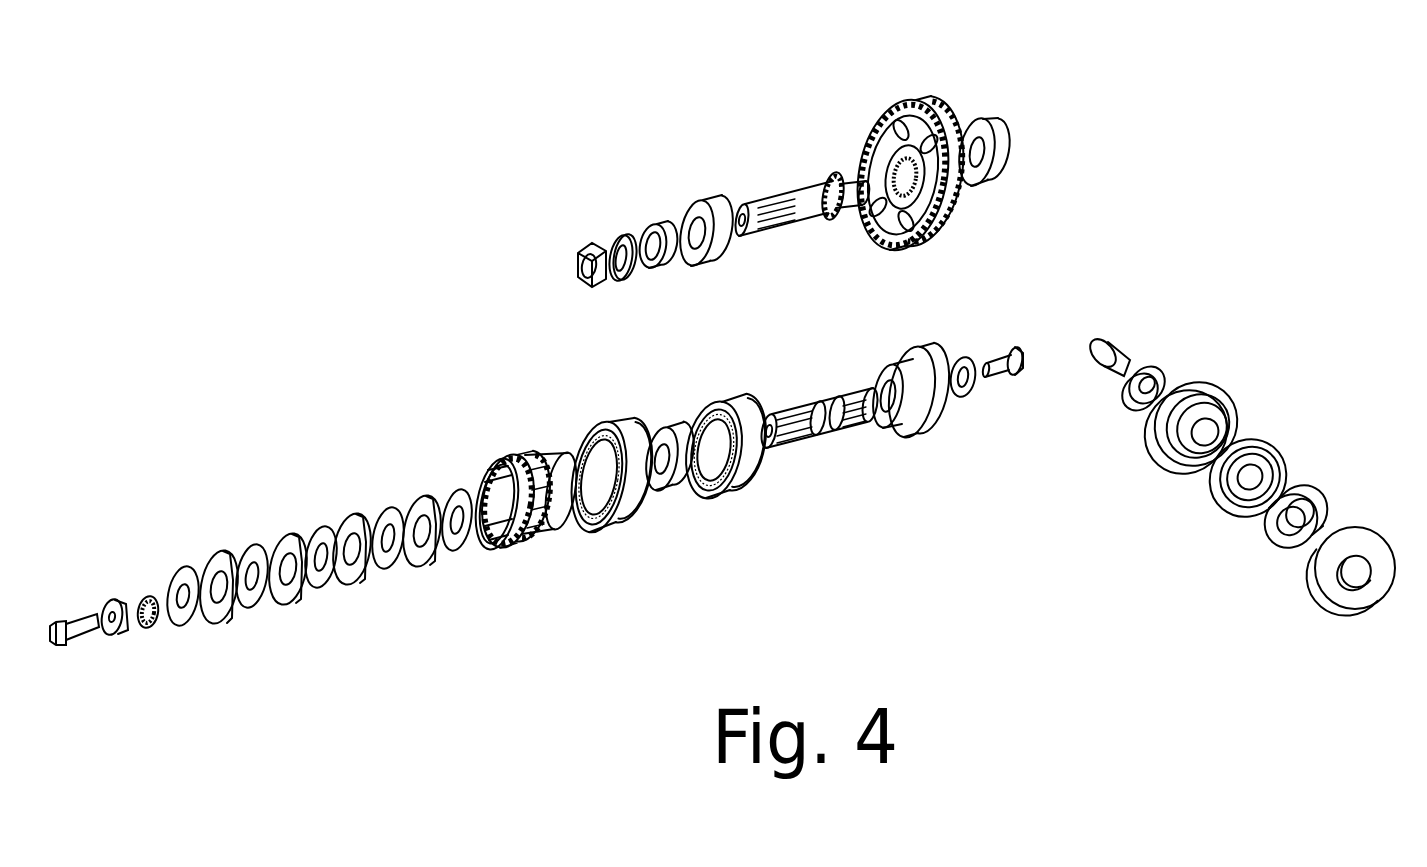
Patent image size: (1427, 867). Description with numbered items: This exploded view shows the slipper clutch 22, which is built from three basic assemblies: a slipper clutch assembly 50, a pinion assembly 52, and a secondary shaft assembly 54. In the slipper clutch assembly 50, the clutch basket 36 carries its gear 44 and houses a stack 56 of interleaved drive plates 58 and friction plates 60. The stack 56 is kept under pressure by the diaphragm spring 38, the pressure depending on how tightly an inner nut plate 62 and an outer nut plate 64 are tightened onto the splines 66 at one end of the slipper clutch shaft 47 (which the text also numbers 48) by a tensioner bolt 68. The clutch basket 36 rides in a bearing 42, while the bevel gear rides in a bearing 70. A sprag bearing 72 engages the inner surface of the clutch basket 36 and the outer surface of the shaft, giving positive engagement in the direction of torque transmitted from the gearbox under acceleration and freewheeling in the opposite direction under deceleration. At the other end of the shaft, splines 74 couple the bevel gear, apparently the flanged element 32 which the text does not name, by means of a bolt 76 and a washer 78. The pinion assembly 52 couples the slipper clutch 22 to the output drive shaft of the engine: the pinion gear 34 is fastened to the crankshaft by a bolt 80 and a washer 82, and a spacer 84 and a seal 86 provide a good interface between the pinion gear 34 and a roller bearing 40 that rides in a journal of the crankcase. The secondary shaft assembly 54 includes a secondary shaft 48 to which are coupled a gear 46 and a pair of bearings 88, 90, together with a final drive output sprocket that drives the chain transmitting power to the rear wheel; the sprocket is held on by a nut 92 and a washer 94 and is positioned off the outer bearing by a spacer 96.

The slipper clutch 22 is at (997, 625).
The hub 32 is at (925, 428).
The pinion gear 34 is at (1215, 395).
The clutch basket 36 is at (558, 524).
The diaphragm spring 38 is at (176, 568).
The roller bearing 40 is at (1370, 548).
The bearing 42 is at (630, 522).
The gear 44 is at (520, 547).
The gear 46 is at (905, 100).
The shaft journal 47 is at (821, 406).
The secondary shaft 48 is at (805, 214).
The slipper clutch assembly 50 is at (564, 600).
The pinion assembly 52 is at (1218, 562).
The secondary shaft assembly 54 is at (717, 122).
The stack 56 is at (297, 446).
The drive plates 58 is at (247, 546).
The friction plates 60 is at (226, 620).
The inner nut plate 62 is at (152, 622).
The outer nut plate 64 is at (118, 628).
The splines 66 is at (793, 442).
The tensioner bolt 68 is at (72, 635).
The bearing 70 is at (745, 490).
The sprag bearing 72 is at (683, 483).
The splines 74 is at (860, 426).
The bolt 76 is at (1006, 374).
The washer 78 is at (968, 393).
The bolt 80 is at (1117, 340).
The washer 82 is at (1150, 368).
The spacer 84 is at (1270, 450).
The seal 86 is at (1310, 500).
The bearing 88 is at (988, 122).
The bearing 90 is at (707, 200).
The nut 92 is at (590, 244).
The washer 94 is at (629, 280).
The spacer 96 is at (659, 224).